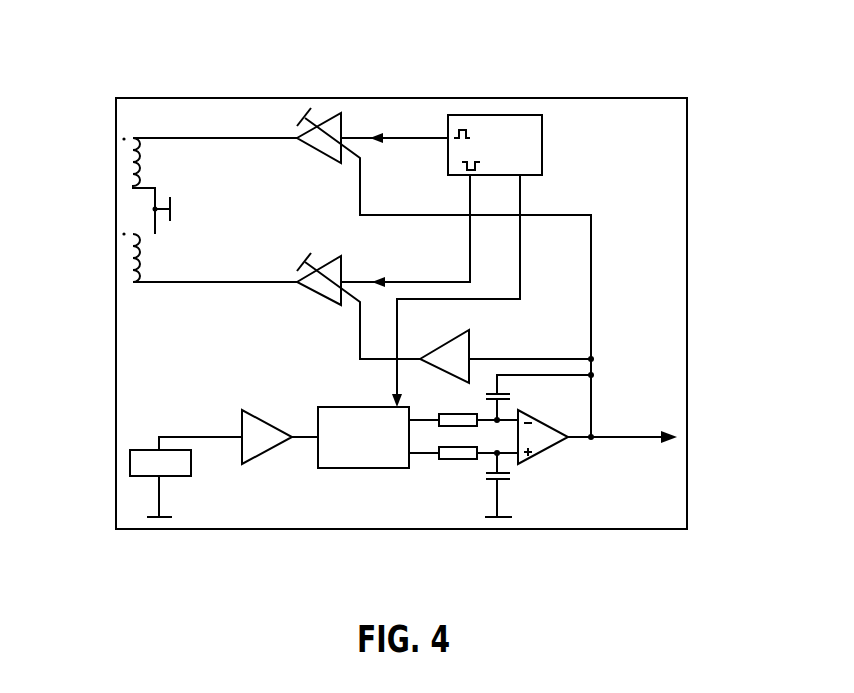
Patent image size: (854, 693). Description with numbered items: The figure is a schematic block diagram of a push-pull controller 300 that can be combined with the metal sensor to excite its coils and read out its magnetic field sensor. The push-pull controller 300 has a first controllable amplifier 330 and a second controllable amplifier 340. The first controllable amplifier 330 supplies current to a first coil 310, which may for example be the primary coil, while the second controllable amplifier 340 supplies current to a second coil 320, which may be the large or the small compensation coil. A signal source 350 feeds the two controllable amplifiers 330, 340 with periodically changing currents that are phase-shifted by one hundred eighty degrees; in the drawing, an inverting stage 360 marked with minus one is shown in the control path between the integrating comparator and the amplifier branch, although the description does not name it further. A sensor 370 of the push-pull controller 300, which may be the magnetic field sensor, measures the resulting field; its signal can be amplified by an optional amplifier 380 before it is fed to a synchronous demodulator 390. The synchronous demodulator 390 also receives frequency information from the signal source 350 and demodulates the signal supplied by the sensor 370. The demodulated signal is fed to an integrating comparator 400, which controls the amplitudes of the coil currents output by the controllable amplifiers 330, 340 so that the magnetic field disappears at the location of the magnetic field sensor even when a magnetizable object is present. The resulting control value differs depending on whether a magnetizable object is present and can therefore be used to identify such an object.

The push-pull controller 300 is at (738, 92).
The first coil 310 is at (132, 166).
The second coil 320 is at (132, 262).
The first controllable amplifier 330 is at (323, 113).
The second controllable amplifier 340 is at (327, 300).
The signal source 350 is at (490, 115).
The inverter 360 is at (470, 336).
The sensor 370 is at (130, 457).
The amplifier 380 is at (258, 418).
The synchronous demodulator 390 is at (362, 468).
The integrating comparator 400 is at (548, 455).